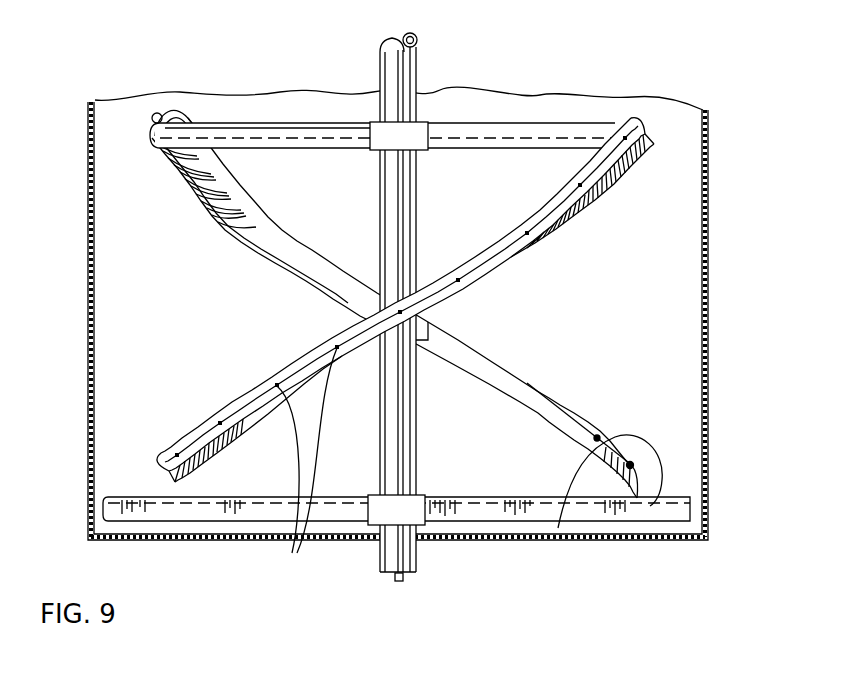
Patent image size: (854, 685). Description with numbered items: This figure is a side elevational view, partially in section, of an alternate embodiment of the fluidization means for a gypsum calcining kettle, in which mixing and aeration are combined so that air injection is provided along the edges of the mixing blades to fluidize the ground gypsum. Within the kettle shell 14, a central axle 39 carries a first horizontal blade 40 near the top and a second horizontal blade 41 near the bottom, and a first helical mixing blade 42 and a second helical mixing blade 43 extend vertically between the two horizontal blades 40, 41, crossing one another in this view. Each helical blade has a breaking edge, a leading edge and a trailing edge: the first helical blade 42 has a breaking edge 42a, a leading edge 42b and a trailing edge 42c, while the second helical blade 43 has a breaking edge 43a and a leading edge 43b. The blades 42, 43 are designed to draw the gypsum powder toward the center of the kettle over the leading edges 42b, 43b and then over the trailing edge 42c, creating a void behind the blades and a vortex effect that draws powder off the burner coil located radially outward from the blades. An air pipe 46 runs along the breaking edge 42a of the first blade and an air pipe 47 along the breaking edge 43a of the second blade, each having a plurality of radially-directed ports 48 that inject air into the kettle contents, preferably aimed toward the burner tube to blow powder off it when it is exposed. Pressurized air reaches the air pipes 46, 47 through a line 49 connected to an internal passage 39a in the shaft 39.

The kettle shell 14 is at (712, 143).
The central axle 39 is at (405, 70).
The internal passage 39a is at (418, 480).
The first horizontal blade 40 is at (224, 137).
The second horizontal blade 41 is at (260, 512).
The first helical mixing blade 42 is at (613, 160).
The breaking edge 42a is at (603, 157).
The leading edge 42b is at (643, 130).
The trailing edge 42c is at (163, 155).
The second helical mixing blade 43 is at (253, 224).
The breaking edge 43a is at (633, 462).
The leading edge 43b is at (195, 180).
The air pipe 46 is at (193, 440).
The air pipe 47 is at (613, 443).
The radially-directed ports 48 is at (640, 470).
The line 49 is at (404, 582).